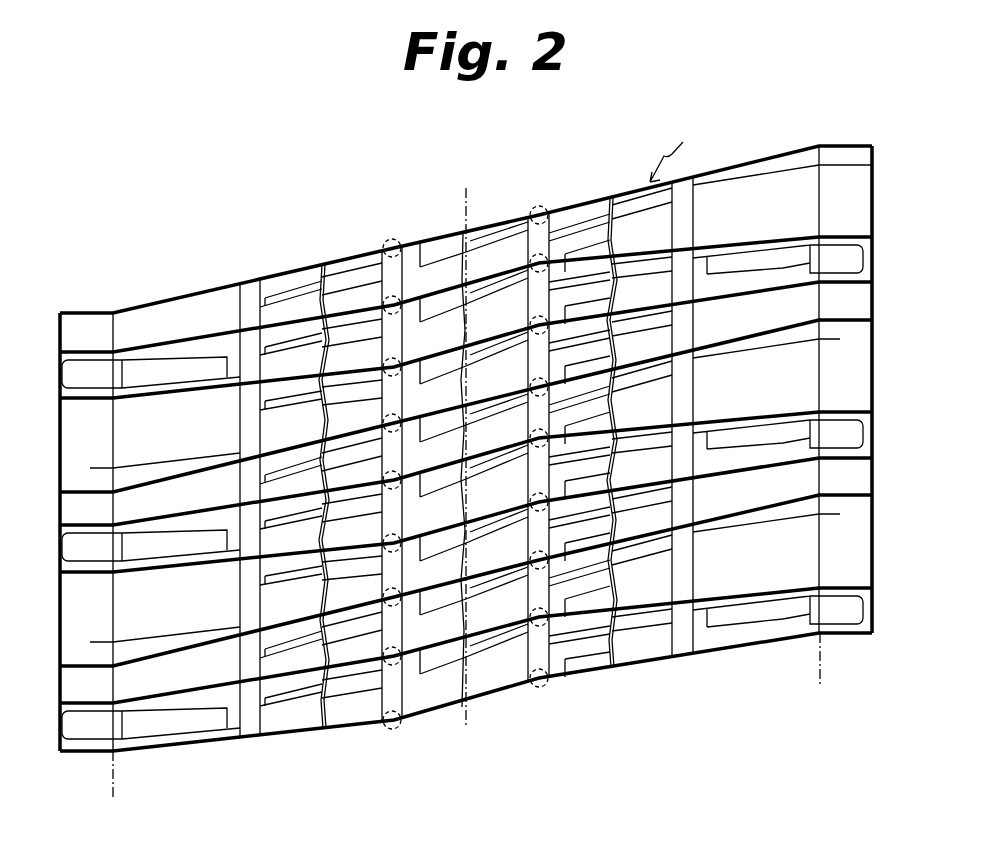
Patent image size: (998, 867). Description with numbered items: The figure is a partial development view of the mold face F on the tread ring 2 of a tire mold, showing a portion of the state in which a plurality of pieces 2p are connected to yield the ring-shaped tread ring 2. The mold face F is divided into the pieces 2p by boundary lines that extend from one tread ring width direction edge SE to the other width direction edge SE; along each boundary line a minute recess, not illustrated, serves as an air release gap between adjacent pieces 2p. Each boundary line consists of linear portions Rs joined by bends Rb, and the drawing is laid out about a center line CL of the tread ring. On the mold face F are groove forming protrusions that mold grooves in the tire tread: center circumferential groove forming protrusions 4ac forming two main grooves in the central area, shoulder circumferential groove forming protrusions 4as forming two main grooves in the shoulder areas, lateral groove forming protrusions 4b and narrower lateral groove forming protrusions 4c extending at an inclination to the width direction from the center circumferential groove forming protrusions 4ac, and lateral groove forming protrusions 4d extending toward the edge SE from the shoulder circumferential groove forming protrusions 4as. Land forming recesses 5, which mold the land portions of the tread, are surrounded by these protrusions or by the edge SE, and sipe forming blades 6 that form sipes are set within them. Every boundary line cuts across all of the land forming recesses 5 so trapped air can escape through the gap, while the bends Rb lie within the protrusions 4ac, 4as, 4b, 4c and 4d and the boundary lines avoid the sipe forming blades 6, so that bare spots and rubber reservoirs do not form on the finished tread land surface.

The tread ring 2 is at (859, 131).
The piece 2p is at (512, 448).
The lateral groove forming protrusion 4b is at (363, 336).
The lateral groove forming protrusion 4c is at (365, 391).
The lateral groove forming protrusion 4d is at (462, 495).
The shoulder circumferential groove forming protrusion 4as is at (467, 716).
The center circumferential groove forming protrusion 4ac is at (388, 718).
The land forming recess 5 is at (463, 498).
The sipe forming blade 6 is at (481, 407).
The linear portion Rs is at (507, 483).
The bend Rb is at (464, 456).
The center line CL is at (462, 447).
The tread ring width direction edge SE is at (462, 727).
The mold face F is at (674, 151).